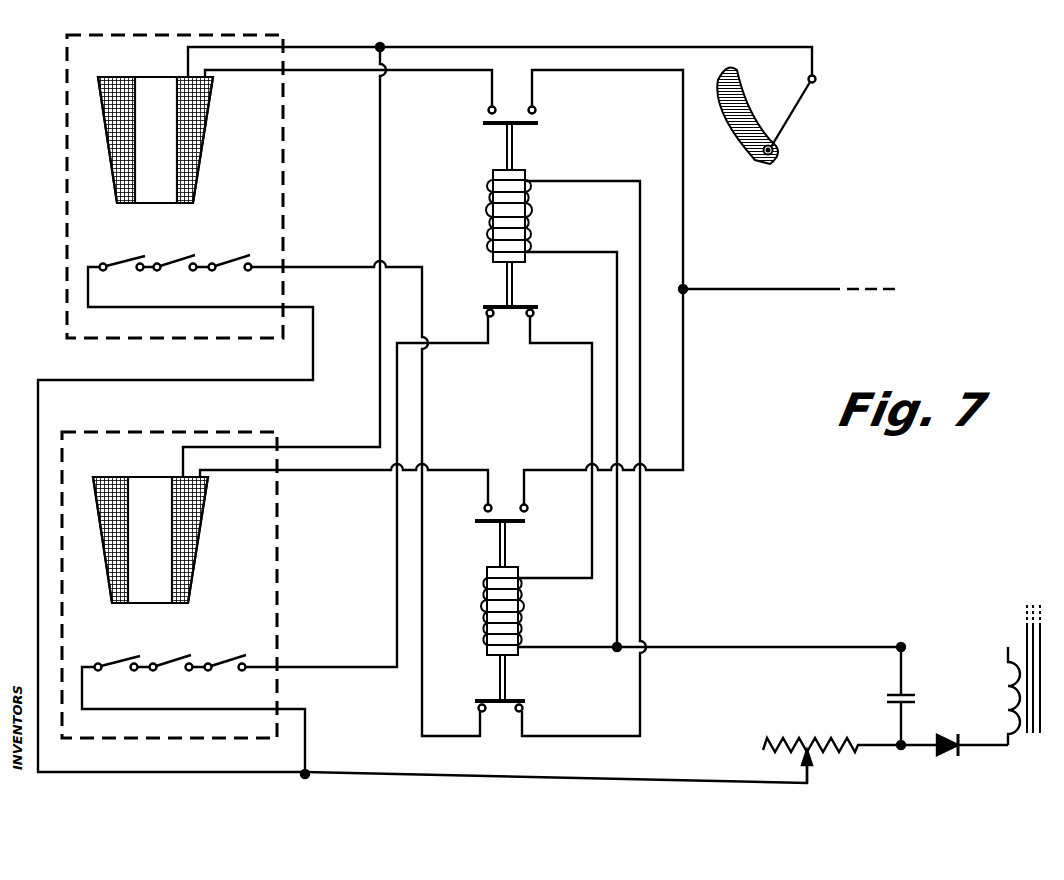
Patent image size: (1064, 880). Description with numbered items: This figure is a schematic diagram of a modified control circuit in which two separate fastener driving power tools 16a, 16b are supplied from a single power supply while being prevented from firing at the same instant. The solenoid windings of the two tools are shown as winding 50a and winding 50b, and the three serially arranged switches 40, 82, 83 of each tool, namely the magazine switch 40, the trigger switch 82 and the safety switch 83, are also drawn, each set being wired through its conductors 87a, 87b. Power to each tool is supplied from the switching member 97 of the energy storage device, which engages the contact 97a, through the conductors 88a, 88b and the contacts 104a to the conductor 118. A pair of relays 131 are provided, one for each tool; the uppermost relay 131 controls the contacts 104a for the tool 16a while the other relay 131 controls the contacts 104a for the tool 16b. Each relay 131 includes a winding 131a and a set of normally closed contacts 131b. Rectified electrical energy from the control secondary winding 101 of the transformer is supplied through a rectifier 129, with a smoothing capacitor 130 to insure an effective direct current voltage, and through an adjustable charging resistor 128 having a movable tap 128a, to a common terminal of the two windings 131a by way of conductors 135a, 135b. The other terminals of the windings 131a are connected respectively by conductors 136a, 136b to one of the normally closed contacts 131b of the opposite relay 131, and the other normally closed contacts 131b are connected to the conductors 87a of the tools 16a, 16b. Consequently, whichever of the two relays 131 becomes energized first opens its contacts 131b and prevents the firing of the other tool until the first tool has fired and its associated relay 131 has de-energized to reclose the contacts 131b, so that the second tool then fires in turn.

The power tool 16a is at (66, 58).
The power tool 16b is at (154, 425).
The winding 50a is at (214, 128).
The winding 50b is at (204, 542).
The conductor 88a is at (332, 47).
The conductor 88b is at (304, 72).
The conductor 87a is at (305, 266).
The conductor 87b is at (310, 310).
The switch 40 is at (125, 275).
The trigger switch 82 is at (168, 272).
The safety switch 83 is at (216, 272).
The contacts 104a is at (533, 106).
The relay 131 is at (515, 208).
The winding 131a is at (490, 197).
The normally closed contacts 131b is at (492, 318).
The conductor 136a is at (556, 178).
The conductor 136b is at (592, 398).
The conductor 135a is at (556, 649).
The conductor 135b is at (616, 268).
The switching member 97 is at (795, 113).
The contact 97a is at (778, 153).
The conductor 118 is at (773, 290).
The smoothing capacitor 130 is at (892, 690).
The adjustable charging resistor 128 is at (816, 742).
The movable tap 128a is at (812, 770).
The rectifier 129 is at (945, 757).
The control secondary winding 101 is at (1015, 748).